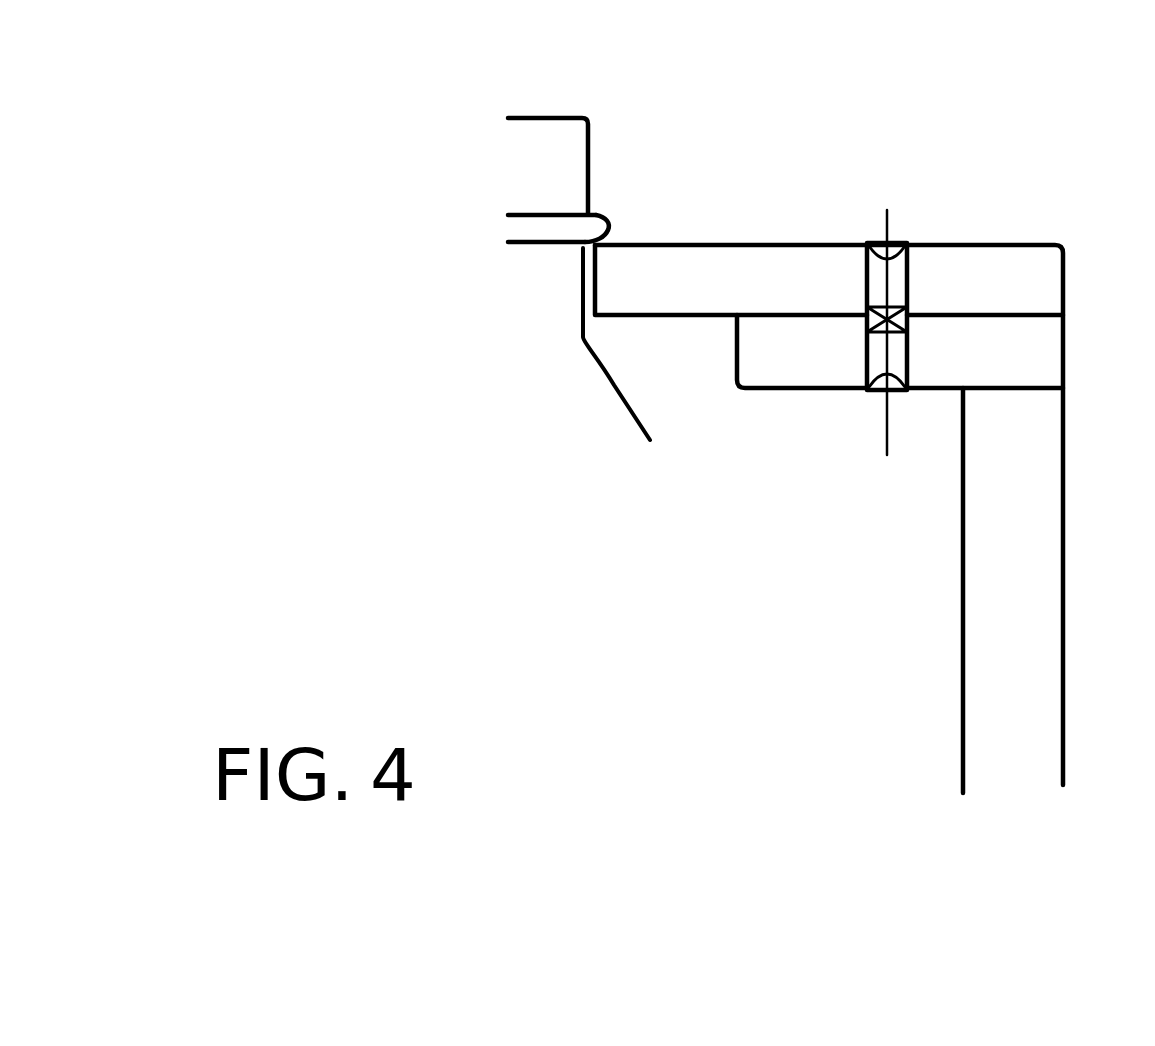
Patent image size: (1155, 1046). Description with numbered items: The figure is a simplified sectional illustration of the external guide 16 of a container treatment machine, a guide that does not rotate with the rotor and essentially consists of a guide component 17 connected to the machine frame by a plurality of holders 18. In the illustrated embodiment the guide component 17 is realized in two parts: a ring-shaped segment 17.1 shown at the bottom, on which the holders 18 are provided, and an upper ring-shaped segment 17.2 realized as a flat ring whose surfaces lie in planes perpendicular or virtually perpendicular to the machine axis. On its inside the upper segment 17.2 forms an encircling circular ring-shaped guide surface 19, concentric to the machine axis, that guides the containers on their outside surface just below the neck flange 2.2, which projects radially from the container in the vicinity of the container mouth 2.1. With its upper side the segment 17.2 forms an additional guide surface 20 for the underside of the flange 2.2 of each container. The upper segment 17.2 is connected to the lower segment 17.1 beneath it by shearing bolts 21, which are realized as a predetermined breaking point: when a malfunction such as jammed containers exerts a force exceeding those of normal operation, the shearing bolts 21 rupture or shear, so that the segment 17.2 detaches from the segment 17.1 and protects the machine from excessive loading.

The container mouth 2.1 is at (540, 105).
The neck flange 2.2 is at (604, 230).
The external guide 16 is at (937, 128).
The guide component 17 is at (946, 221).
The ring-shaped segment 17.1 is at (813, 352).
The upper ring-shaped segment 17.2 is at (703, 283).
The holder 18 is at (1030, 603).
The guide surface 19 is at (597, 282).
The additional guide surface 20 is at (633, 240).
The shearing bolt 21 is at (910, 290).